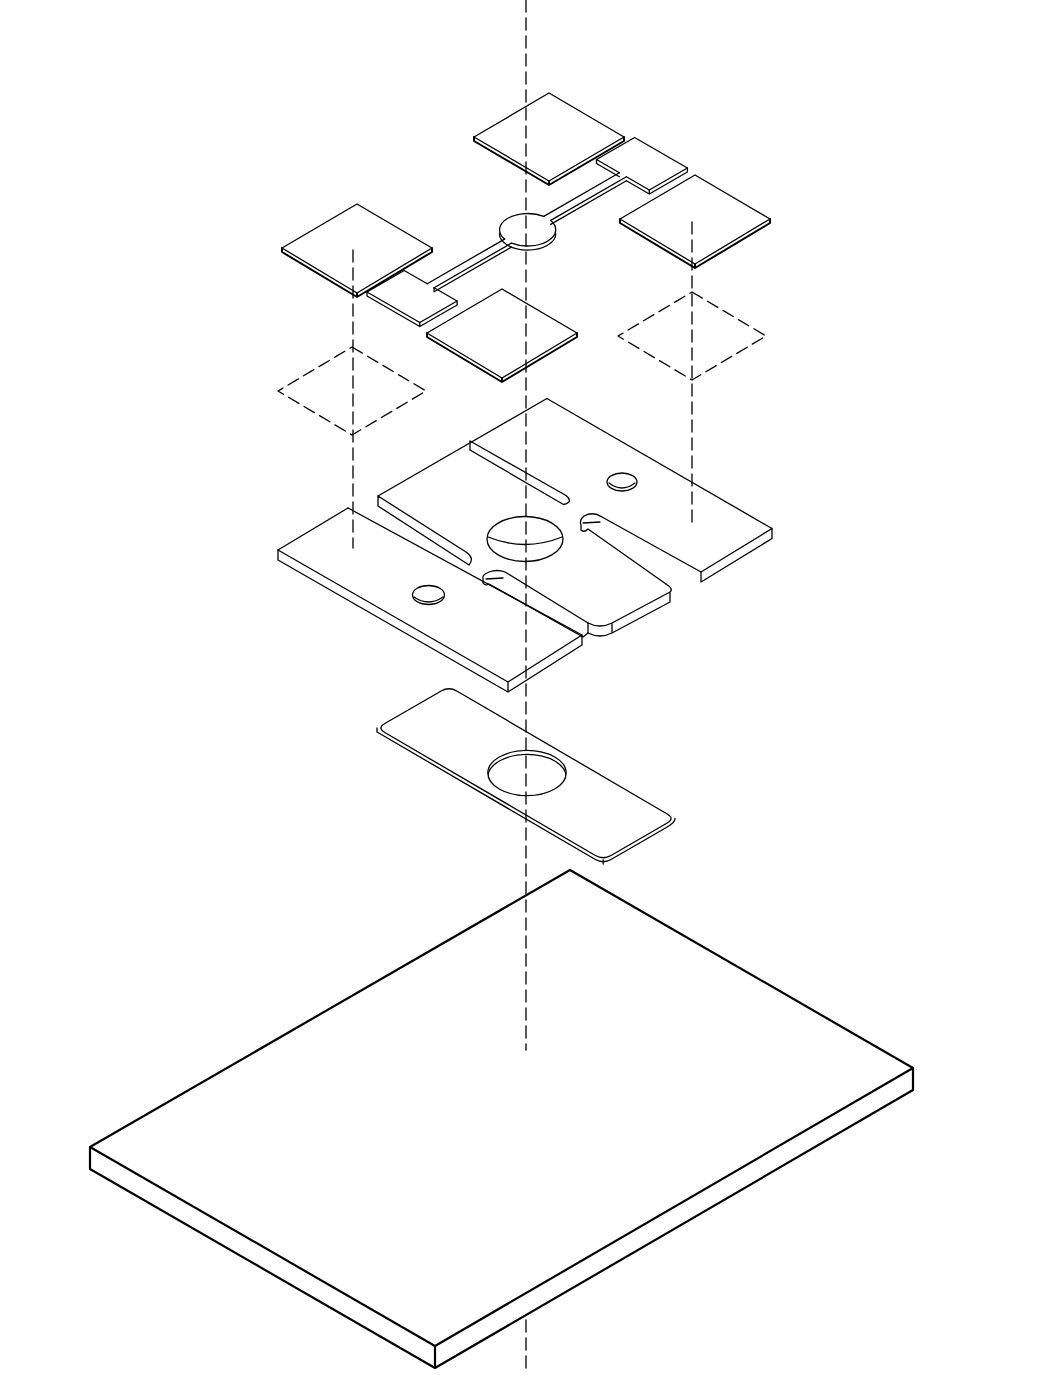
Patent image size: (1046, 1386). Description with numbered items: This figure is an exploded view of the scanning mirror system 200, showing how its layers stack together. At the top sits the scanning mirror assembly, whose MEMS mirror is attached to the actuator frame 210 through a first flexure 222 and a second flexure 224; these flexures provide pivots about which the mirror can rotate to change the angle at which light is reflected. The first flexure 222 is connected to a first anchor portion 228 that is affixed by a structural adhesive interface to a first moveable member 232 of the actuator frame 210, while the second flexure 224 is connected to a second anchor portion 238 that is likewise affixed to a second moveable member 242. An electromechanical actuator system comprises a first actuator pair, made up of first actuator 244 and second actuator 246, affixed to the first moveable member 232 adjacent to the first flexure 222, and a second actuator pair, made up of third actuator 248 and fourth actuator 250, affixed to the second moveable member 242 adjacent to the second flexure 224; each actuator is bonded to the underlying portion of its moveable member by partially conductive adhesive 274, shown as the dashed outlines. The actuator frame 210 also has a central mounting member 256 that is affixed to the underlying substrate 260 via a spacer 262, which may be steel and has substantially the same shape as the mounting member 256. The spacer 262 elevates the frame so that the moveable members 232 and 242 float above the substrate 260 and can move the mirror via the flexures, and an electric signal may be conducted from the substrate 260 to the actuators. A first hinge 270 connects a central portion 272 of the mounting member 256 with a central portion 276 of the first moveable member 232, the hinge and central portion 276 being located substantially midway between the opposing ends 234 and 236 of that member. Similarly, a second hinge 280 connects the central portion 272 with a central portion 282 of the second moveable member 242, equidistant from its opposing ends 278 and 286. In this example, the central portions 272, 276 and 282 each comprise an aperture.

The scanning mirror system 200 is at (288, 47).
The actuator frame 210 is at (450, 452).
The first flexure 222 is at (592, 203).
The second flexure 224 is at (467, 262).
The first anchor portion 228 is at (663, 152).
The first moveable member 232 is at (705, 487).
The opposing end of first moveable member 234 is at (490, 423).
The opposing end of first moveable member 236 is at (717, 568).
The second anchor portion 238 is at (387, 310).
The second moveable member 242 is at (310, 570).
The first actuator 244 is at (562, 120).
The second actuator 246 is at (732, 215).
The third actuator 248 is at (374, 230).
The fourth actuator 250 is at (467, 347).
The central mounting member 256 is at (417, 507).
The substrate 260 is at (790, 1000).
The spacer 262 is at (613, 777).
The first hinge 270 is at (575, 510).
The central portion of mounting member 272 is at (478, 525).
The partially conductive adhesive 274 is at (751, 338).
The central portion of first moveable member 276 is at (634, 459).
The opposing end of second moveable member 278 is at (300, 532).
The second hinge 280 is at (477, 565).
The central portion of second moveable member 282 is at (397, 604).
The opposing end of second moveable member 286 is at (540, 668).